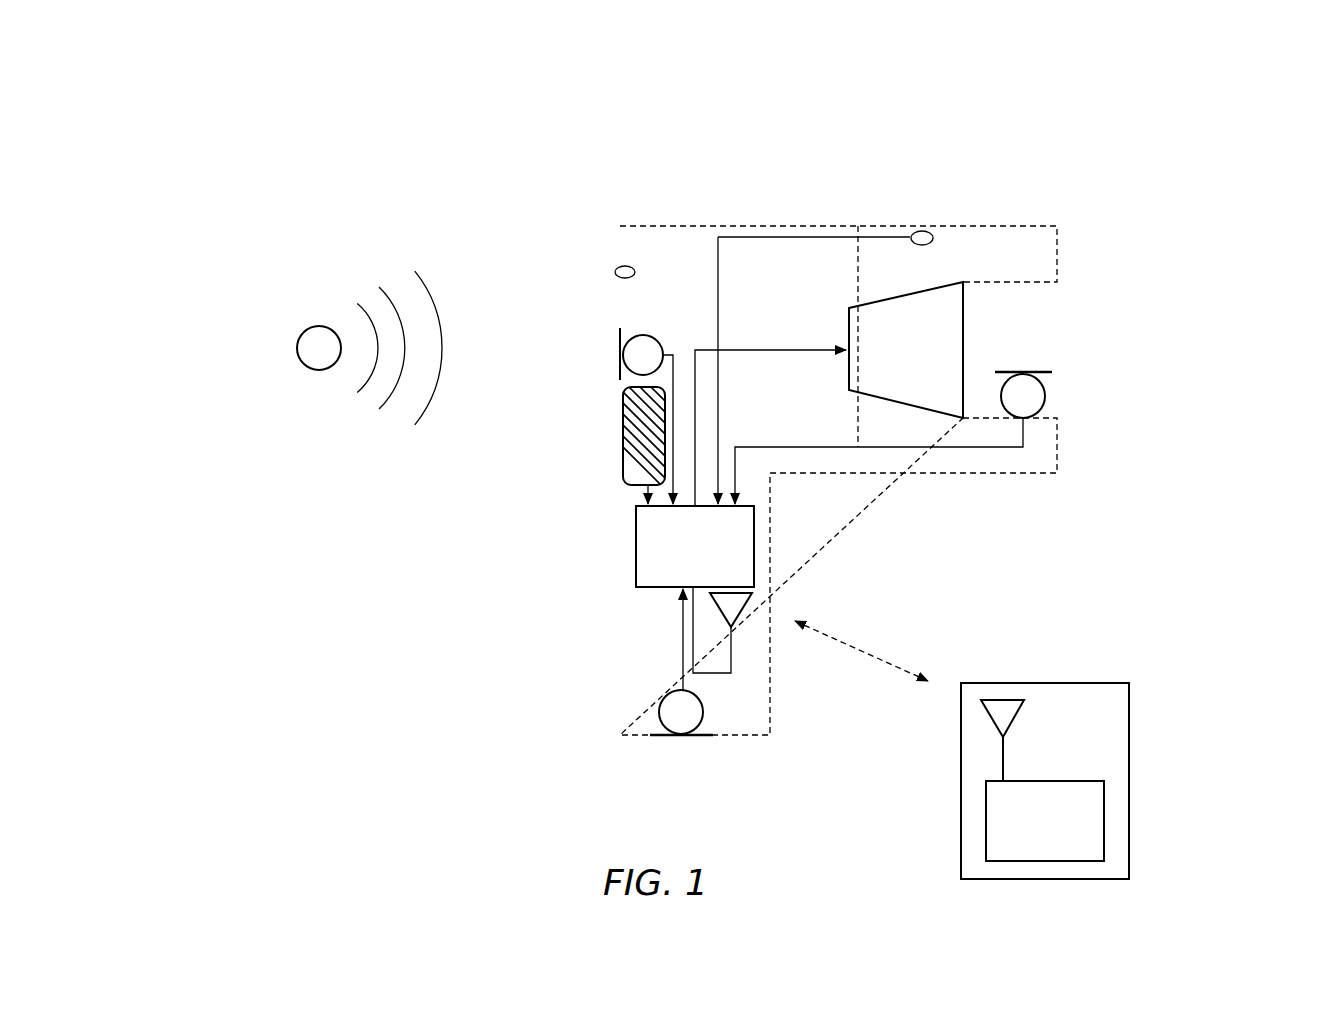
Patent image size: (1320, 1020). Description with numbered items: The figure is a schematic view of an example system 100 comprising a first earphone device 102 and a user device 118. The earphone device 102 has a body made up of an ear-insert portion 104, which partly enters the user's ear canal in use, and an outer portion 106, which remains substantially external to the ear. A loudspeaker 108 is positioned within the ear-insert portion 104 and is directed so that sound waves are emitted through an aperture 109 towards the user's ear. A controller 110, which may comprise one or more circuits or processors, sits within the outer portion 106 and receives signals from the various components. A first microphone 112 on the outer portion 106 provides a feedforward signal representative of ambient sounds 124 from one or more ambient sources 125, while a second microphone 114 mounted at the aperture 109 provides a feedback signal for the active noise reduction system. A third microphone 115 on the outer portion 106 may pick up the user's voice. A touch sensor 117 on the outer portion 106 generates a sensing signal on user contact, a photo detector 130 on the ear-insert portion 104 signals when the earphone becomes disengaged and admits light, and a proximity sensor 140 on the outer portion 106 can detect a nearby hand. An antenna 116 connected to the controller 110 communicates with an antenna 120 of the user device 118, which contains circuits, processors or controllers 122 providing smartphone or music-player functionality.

The system 100 is at (1195, 148).
The first earphone device 102 is at (793, 228).
The ear-insert portion 104 is at (924, 336).
The outer portion 106 is at (660, 320).
The loudspeaker 108 is at (906, 350).
The aperture 109 is at (1025, 326).
The controller 110 is at (636, 545).
The first microphone 112 is at (618, 357).
The second microphone 114 is at (1045, 390).
The third microphone 115 is at (690, 737).
The antenna 116 is at (735, 632).
The touch sensor 117 is at (620, 430).
The user device 118 is at (1130, 735).
The antenna 120 is at (985, 713).
The circuits, processors, controllers 122 is at (988, 830).
The ambient sounds 124 is at (412, 280).
The ambient sources 125 is at (297, 352).
The photo detector 130 is at (930, 232).
The proximity sensor 140 is at (617, 267).